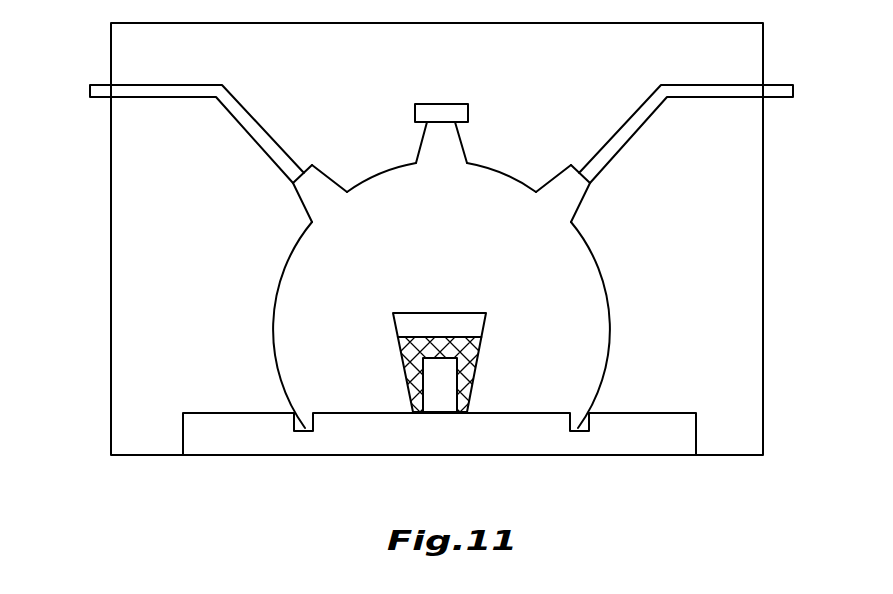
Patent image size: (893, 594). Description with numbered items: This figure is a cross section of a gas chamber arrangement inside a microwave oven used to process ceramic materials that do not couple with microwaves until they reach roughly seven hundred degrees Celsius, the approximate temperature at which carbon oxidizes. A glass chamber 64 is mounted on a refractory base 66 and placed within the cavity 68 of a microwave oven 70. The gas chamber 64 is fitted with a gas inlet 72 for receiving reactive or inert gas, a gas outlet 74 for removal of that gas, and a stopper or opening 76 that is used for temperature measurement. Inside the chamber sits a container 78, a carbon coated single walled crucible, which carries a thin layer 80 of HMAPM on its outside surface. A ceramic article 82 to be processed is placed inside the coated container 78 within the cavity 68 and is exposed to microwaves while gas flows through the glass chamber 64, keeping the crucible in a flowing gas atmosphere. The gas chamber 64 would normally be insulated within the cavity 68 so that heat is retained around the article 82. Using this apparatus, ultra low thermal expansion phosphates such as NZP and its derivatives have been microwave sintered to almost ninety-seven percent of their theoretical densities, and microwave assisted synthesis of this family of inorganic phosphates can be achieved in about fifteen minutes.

The glass chamber 64 is at (605, 328).
The refractory base 66 is at (643, 440).
The cavity 68 is at (673, 257).
The microwave oven 70 is at (763, 240).
The gas inlet 72 is at (778, 84).
The gas outlet 74 is at (100, 84).
The stopper or opening 76 is at (442, 104).
The container 78 is at (430, 313).
The thin layer of HMAPM 80 is at (478, 352).
The ceramic article 82 is at (433, 370).